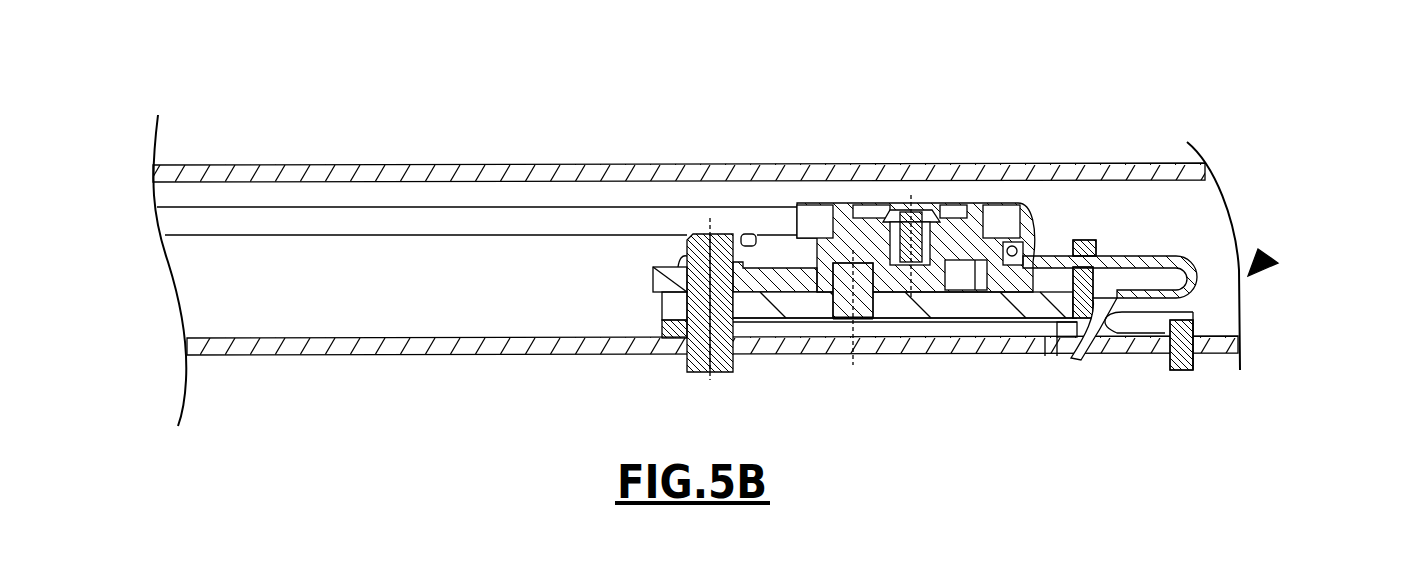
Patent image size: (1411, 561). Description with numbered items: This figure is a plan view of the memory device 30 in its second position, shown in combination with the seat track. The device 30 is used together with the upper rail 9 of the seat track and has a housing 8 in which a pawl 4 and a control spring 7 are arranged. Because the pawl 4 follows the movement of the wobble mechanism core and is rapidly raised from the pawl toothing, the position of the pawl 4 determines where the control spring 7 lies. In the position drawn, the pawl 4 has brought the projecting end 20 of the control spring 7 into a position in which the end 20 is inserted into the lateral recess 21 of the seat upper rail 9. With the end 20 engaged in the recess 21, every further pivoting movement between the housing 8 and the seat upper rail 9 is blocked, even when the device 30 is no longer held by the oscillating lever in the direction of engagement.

The pawl 4 is at (988, 307).
The control spring 7 is at (1197, 270).
The housing 8 is at (1040, 268).
The upper rail 9 is at (1073, 167).
The end of the control spring 20 is at (1057, 360).
The recess 21 is at (1060, 353).
The device 30 is at (1262, 258).